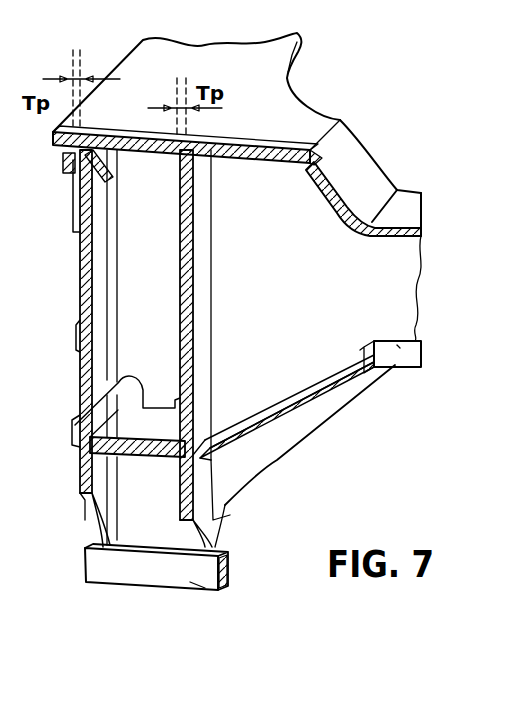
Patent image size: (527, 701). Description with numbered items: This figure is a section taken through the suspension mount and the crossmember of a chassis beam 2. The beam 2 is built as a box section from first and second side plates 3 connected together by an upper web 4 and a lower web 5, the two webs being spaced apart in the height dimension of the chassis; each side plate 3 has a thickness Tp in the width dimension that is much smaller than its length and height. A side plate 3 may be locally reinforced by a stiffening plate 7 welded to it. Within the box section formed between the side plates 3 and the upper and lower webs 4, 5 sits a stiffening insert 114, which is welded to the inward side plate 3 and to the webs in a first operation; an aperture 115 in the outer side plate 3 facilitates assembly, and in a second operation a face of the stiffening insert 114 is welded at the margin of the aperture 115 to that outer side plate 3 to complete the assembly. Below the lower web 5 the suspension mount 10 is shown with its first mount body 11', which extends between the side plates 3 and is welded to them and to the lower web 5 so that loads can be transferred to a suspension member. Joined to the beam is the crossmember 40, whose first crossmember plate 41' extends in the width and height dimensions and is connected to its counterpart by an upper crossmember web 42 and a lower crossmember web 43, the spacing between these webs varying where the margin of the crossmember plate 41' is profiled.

The beam 2 is at (313, 72).
The upper web 4 is at (166, 52).
The stiffening plate 7 is at (66, 160).
The aperture 115 is at (74, 242).
The stiffening insert 114 is at (80, 282).
The first crossmember plate 41' is at (344, 211).
The upper crossmember web 42 is at (373, 233).
The lower crossmember web 43 is at (389, 343).
The crossmember 40 is at (402, 388).
The lower web 5 is at (140, 450).
The side plate 3 is at (80, 482).
The suspension mount 10 is at (131, 611).
The first mount body 11' is at (210, 613).